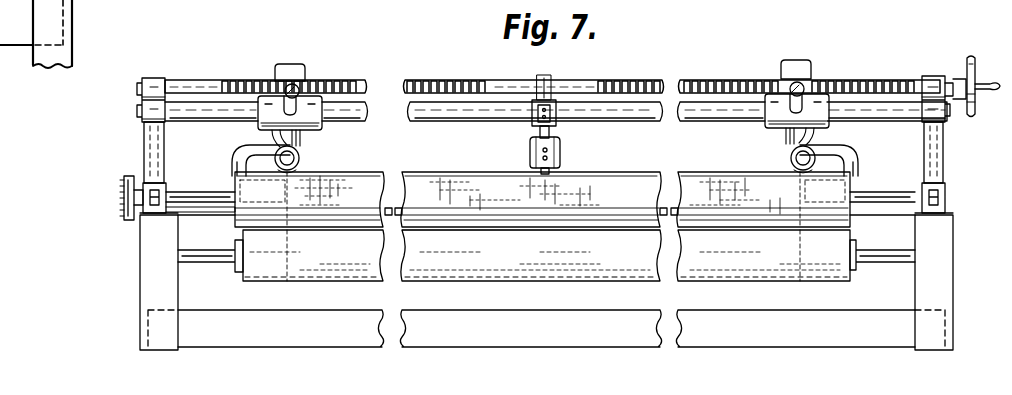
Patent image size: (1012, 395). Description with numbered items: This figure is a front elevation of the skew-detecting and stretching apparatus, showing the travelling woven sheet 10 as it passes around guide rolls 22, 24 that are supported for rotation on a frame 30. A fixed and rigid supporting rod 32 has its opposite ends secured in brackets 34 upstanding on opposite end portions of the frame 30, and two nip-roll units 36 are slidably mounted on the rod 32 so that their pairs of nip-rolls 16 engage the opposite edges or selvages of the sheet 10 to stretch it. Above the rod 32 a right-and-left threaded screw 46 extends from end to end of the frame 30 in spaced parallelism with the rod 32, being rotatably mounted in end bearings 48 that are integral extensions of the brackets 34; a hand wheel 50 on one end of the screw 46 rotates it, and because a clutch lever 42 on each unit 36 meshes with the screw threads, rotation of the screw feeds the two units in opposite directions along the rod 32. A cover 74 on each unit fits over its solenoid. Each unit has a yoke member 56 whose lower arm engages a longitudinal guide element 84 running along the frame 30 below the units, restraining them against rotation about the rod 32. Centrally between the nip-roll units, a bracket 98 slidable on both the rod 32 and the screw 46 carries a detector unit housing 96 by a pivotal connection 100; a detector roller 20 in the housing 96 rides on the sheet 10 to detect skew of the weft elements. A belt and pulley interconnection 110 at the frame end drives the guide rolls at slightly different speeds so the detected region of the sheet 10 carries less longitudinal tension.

The sheet 10 is at (508, 213).
The nip-rolls 16 is at (312, 161).
The detector roller 20 is at (550, 170).
The guide roll 22 is at (251, 269).
The guide roll 24 is at (240, 218).
The frame 30 is at (138, 262).
The supporting rod 32 is at (457, 118).
The brackets 34 is at (145, 143).
The nip-roll unit 36 is at (310, 144).
The clutch lever 42 is at (299, 88).
The screw 46 is at (491, 86).
The end bearings 48 is at (159, 78).
The hand wheel 50 is at (970, 56).
The yoke member 56 is at (246, 160).
The cover 74 is at (300, 70).
The guide element 84 is at (188, 210).
The detector unit housing 96 is at (524, 156).
The bracket 98 is at (560, 116).
The pivotal connection 100 is at (575, 92).
The belt and pulley interconnection 110 is at (120, 196).